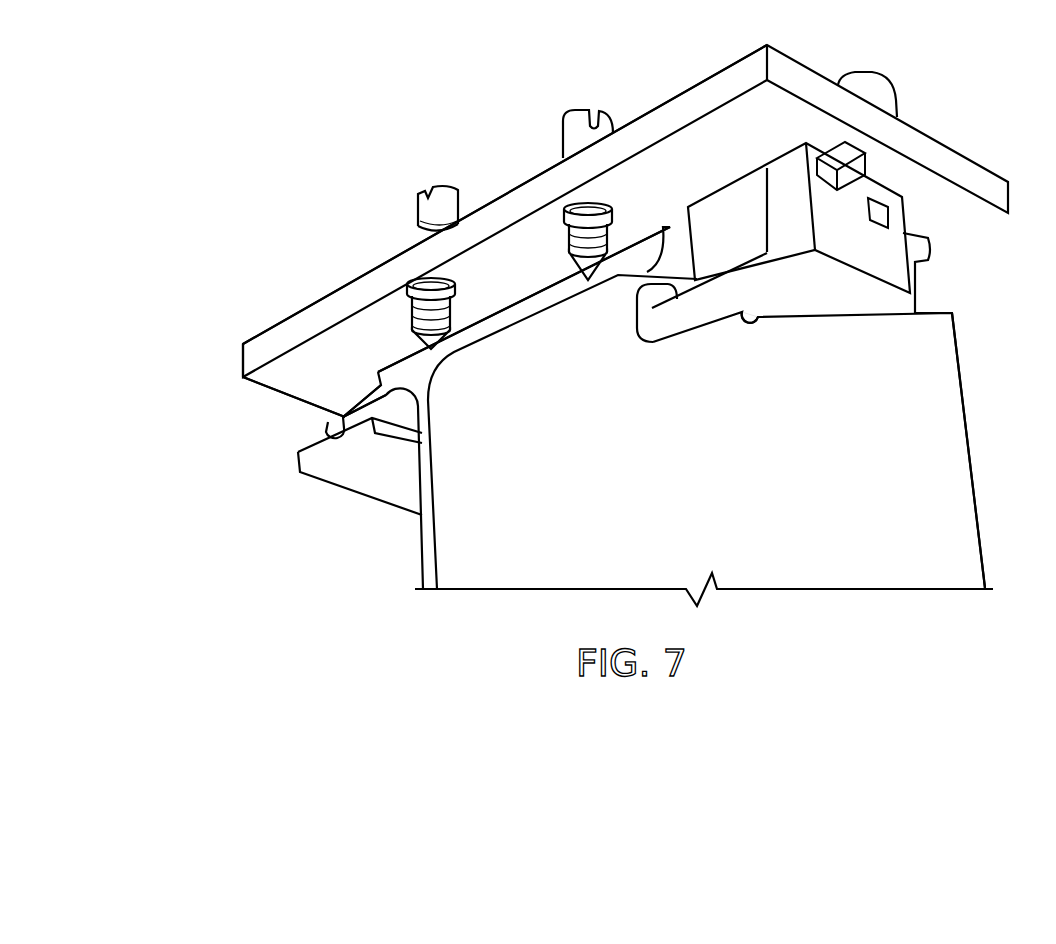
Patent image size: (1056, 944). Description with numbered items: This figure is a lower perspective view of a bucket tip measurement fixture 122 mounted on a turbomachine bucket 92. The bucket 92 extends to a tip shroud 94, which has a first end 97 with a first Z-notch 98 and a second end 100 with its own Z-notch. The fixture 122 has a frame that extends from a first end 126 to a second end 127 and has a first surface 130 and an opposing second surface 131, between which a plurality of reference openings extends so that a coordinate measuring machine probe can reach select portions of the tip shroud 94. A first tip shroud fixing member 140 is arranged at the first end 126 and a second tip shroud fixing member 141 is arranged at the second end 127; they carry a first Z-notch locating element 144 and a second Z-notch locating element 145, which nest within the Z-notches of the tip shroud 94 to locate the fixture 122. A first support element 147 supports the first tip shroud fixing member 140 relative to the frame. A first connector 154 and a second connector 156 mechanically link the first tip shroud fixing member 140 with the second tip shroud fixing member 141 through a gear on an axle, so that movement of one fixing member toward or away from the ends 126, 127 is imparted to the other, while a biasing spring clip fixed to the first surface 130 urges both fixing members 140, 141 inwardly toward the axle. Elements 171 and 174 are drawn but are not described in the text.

The turbomachine bucket 92 is at (993, 572).
The tip shroud 94 is at (496, 499).
The first end 97 is at (670, 270).
The first Z-notch 98 is at (746, 325).
The second end 100 is at (337, 428).
The bucket tip measurement fixture 122 is at (241, 274).
The first end 126 is at (937, 157).
The second end 127 is at (272, 390).
The first surface 130 is at (315, 298).
The second surface 131 is at (447, 352).
The first tip shroud fixing member 140 is at (791, 225).
The second tip shroud fixing member 141 is at (340, 403).
The first Z-notch locating element 144 is at (763, 311).
The second Z-notch locating element 145 is at (380, 479).
The first support element 147 is at (882, 77).
The first connector 154 is at (855, 155).
The second connector 156 is at (888, 216).
The slotted clip 171 is at (611, 107).
The screw head 174 is at (461, 179).